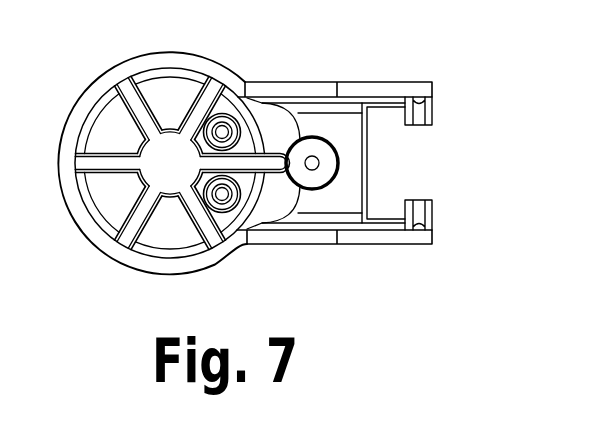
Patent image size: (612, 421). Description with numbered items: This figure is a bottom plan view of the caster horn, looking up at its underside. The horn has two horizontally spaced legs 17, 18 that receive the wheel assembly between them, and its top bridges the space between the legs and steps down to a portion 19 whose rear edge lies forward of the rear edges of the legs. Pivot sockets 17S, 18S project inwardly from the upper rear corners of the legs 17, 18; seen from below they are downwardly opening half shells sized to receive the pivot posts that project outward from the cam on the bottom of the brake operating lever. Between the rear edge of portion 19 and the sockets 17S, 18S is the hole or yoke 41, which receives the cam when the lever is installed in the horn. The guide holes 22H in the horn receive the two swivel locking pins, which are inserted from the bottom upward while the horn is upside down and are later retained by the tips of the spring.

The leg 17 is at (363, 82).
The pivot socket 17S is at (432, 113).
The leg 18 is at (252, 246).
The pivot socket 18S is at (433, 210).
The portion 19 is at (320, 203).
The guide holes 22H is at (226, 129).
The yoke 41 is at (410, 172).